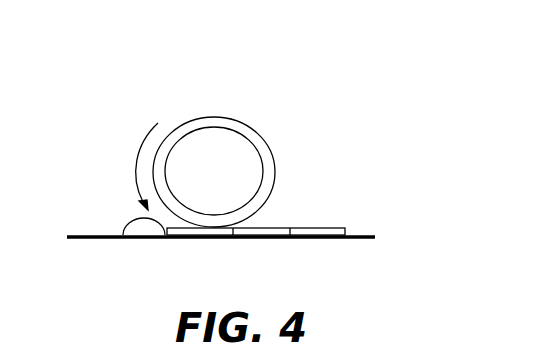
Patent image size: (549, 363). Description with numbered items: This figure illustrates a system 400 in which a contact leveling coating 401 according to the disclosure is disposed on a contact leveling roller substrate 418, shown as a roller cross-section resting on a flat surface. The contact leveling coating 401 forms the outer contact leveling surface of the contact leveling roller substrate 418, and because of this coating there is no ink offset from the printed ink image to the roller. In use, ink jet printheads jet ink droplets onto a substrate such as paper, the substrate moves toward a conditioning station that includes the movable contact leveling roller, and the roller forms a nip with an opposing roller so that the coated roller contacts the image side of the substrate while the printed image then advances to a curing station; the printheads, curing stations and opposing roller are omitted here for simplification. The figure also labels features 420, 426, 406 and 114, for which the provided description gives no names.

The system 400 is at (303, 65).
The contact leveling coating 401 is at (270, 152).
The contact leveling roller substrate 418 is at (197, 125).
The rotation direction arrow 420 is at (133, 172).
The sensor array strip 426 is at (317, 225).
The coupling bump 406 is at (128, 223).
The surface 114 is at (97, 242).